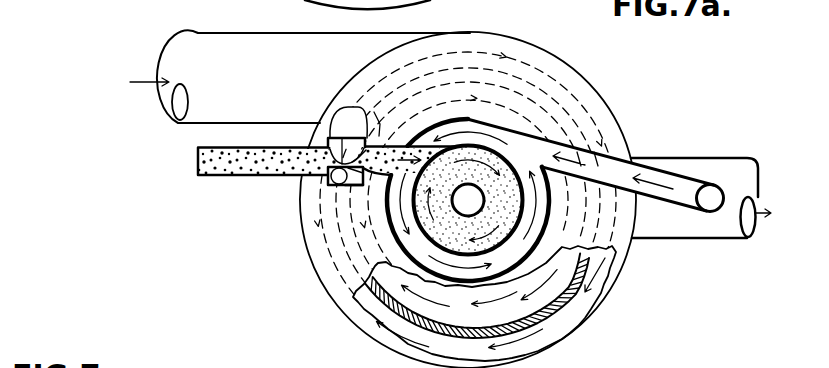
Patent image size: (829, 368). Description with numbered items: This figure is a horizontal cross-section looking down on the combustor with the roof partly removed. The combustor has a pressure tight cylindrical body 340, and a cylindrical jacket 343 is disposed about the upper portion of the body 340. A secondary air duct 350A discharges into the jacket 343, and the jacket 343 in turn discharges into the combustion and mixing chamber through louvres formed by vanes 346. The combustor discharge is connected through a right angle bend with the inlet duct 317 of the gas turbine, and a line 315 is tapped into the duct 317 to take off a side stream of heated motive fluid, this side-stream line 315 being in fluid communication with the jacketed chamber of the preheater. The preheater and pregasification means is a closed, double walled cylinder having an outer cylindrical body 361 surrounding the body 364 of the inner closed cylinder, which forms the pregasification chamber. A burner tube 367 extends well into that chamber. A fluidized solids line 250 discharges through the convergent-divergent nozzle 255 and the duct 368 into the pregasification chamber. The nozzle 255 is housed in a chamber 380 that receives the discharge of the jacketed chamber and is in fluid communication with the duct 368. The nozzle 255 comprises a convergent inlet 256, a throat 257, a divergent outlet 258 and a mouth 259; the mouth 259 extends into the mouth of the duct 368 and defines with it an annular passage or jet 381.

The secondary air duct 350A is at (268, 22).
The cylindrical body 340 is at (565, 108).
The vanes 346 is at (542, 82).
The cylindrical jacket 343 is at (608, 107).
The side-stream line 315 is at (633, 160).
The inlet duct 317 is at (731, 146).
The outer cylindrical body 361 is at (467, 125).
The fluidized solids line 250 is at (248, 176).
The throat 257 is at (336, 110).
The convergent-divergent nozzle 255 is at (342, 138).
The mouth 259 is at (374, 112).
The duct 368 is at (362, 162).
The chamber 380 is at (328, 182).
The convergent inlet 256 is at (353, 185).
The divergent outlet 258 is at (358, 186).
The annular passage 381 is at (363, 187).
The burner tube 367 is at (500, 248).
The body of inner cylinder 364 is at (518, 247).